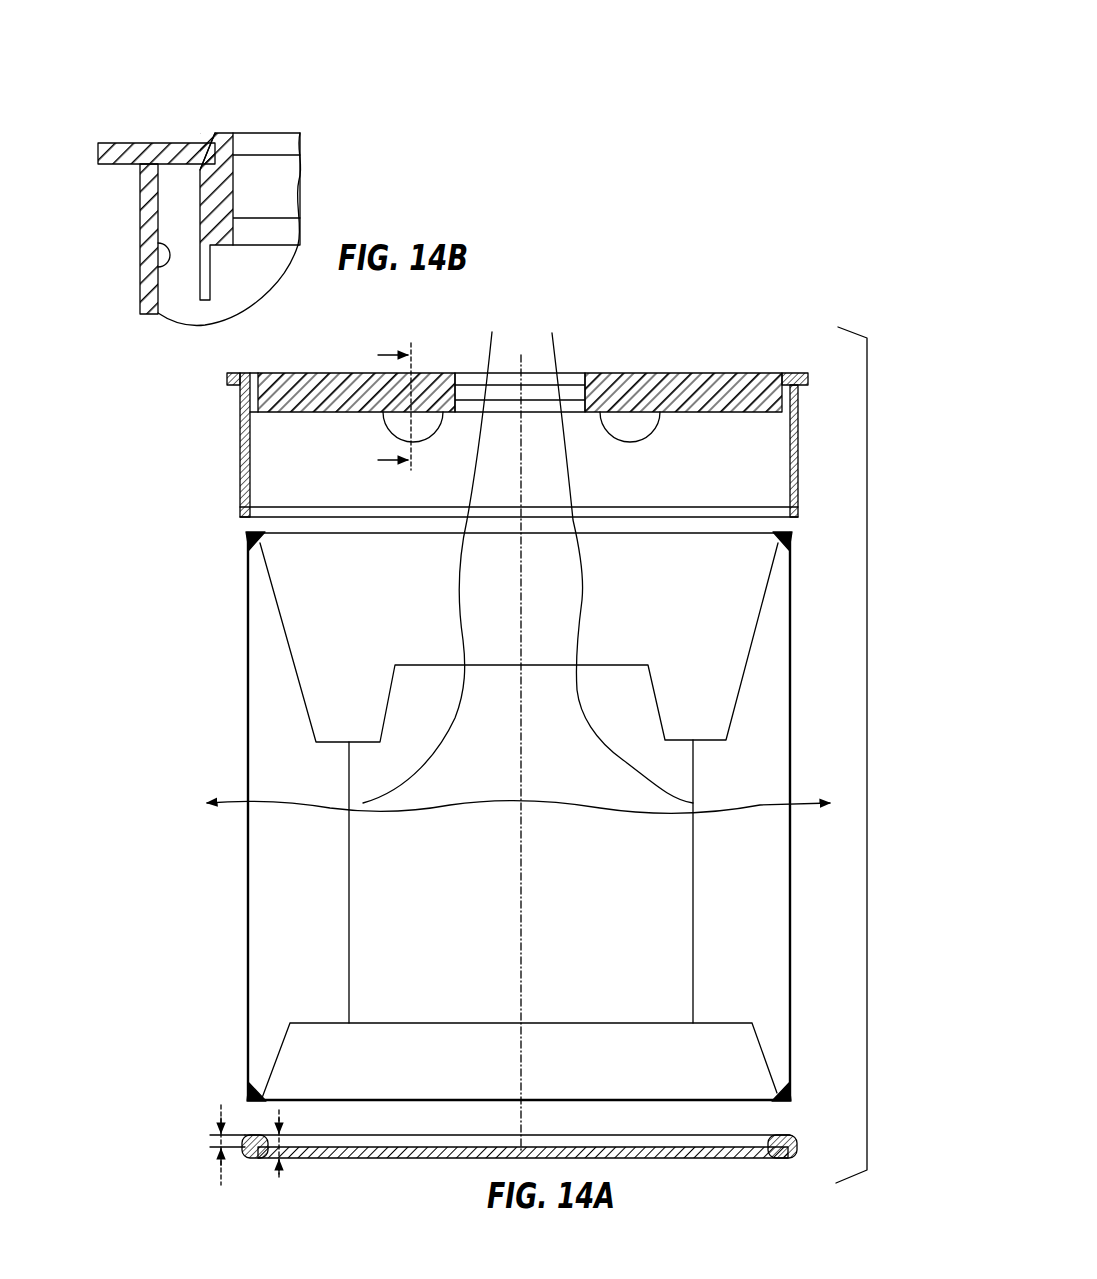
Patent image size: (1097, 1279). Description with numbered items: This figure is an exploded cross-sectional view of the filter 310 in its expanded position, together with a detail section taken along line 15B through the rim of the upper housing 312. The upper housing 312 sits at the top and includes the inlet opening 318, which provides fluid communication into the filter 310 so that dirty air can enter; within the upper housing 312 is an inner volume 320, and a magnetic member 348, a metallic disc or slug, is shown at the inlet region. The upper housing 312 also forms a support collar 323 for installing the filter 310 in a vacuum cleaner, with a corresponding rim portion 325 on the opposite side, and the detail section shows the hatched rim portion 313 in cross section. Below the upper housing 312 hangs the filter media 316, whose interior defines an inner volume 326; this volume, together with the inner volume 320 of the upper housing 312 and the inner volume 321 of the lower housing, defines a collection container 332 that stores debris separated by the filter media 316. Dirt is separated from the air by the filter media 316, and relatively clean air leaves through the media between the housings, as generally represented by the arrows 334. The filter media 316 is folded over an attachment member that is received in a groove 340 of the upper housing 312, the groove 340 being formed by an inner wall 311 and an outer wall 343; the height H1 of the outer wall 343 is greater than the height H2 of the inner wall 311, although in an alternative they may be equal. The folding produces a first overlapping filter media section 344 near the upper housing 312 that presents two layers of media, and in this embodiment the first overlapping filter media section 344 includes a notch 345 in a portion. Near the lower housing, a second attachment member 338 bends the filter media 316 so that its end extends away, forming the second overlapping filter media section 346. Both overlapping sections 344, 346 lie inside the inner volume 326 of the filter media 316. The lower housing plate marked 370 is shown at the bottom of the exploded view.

In FIG. 14B, the filter 310 is at (138, 217).
In FIG. 14A, the filter 310 is at (707, 292).
In FIG. 14B, the inner wall surface 311 is at (203, 255).
In FIG. 14A, the inner wall surface 311 is at (254, 380).
In FIG. 14B, the upper housing 312 is at (170, 195).
In FIG. 14A, the upper housing 312 is at (620, 387).
In FIG. 14B, the lid flange 313 is at (113, 143).
In FIG. 14A, the filter media 316 is at (248, 682).
In FIG. 14B, the inlet opening 318 is at (237, 193).
In FIG. 14A, the inlet opening 318 is at (583, 387).
In FIG. 14A, the inner volume 320 is at (298, 447).
In FIG. 14A, the inner volume 321 is at (383, 1136).
In FIG. 14A, the support collar 323 is at (230, 377).
In FIG. 14A, the rim lip 325 is at (807, 383).
In FIG. 14A, the inner volume 326 is at (248, 540).
In FIG. 14A, the collection container 332 is at (735, 922).
In FIG. 14A, the arrows 334 is at (363, 803).
In FIG. 14A, the second attachment member 338 is at (250, 1080).
In FIG. 14A, the groove 340 is at (247, 420).
In FIG. 14B, the outer wall 343 is at (140, 280).
In FIG. 14A, the outer wall 343 is at (782, 466).
In FIG. 14A, the first overlapping filter media section 344 is at (283, 610).
In FIG. 14A, the notch 345 is at (615, 665).
In FIG. 14A, the second overlapping filter media section 346 is at (282, 1035).
In FIG. 14A, the magnetic member 348 is at (385, 425).
In FIG. 14A, the base end 370 is at (783, 1135).
In FIG. 14A, the section line 15B is at (406, 402).
In FIG. 14A, the height of outer wall H1 is at (217, 1130).
In FIG. 14A, the height of inner wall H2 is at (278, 1159).